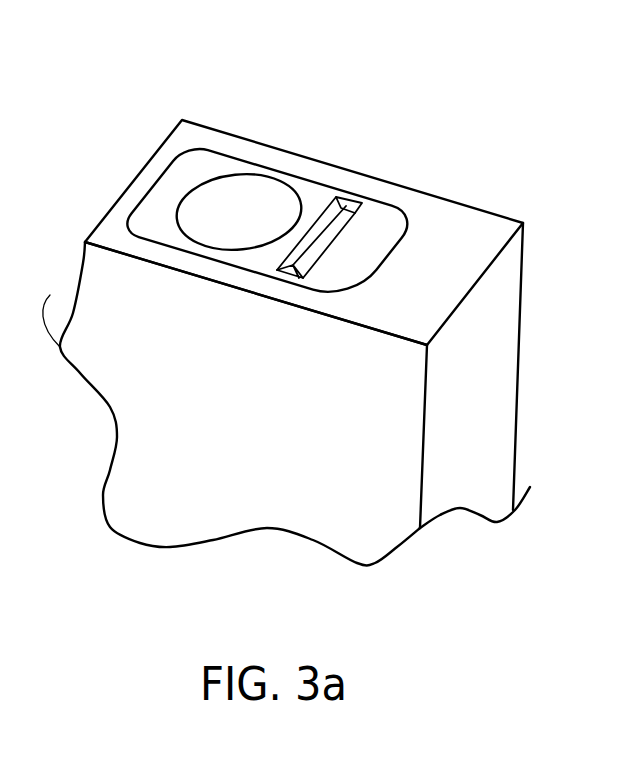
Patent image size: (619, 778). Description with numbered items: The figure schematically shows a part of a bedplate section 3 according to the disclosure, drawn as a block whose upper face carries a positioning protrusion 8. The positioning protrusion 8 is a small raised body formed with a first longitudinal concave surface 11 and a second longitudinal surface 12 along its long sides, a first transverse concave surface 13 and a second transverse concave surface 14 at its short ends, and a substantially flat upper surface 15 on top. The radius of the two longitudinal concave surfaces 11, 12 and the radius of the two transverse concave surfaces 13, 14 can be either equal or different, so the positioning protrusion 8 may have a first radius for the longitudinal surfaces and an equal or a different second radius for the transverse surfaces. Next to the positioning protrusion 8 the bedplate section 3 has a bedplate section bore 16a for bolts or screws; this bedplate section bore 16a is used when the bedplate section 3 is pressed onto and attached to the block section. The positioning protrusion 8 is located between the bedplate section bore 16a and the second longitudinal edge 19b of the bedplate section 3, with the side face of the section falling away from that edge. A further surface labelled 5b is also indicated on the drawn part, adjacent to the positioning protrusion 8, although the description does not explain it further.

The bedplate section 3 is at (368, 237).
The bottom surface of recess 5b is at (357, 257).
The positioning protrusion 8 is at (360, 218).
The first longitudinal concave surface 11 is at (323, 268).
The second longitudinal surface 12 is at (316, 220).
The first transverse concave surface 13 is at (292, 272).
The second transverse concave surface 14 is at (326, 222).
The substantially flat upper surface 15 is at (362, 206).
The bedplate section bore 16a is at (202, 207).
The second longitudinal edge 19b is at (477, 283).